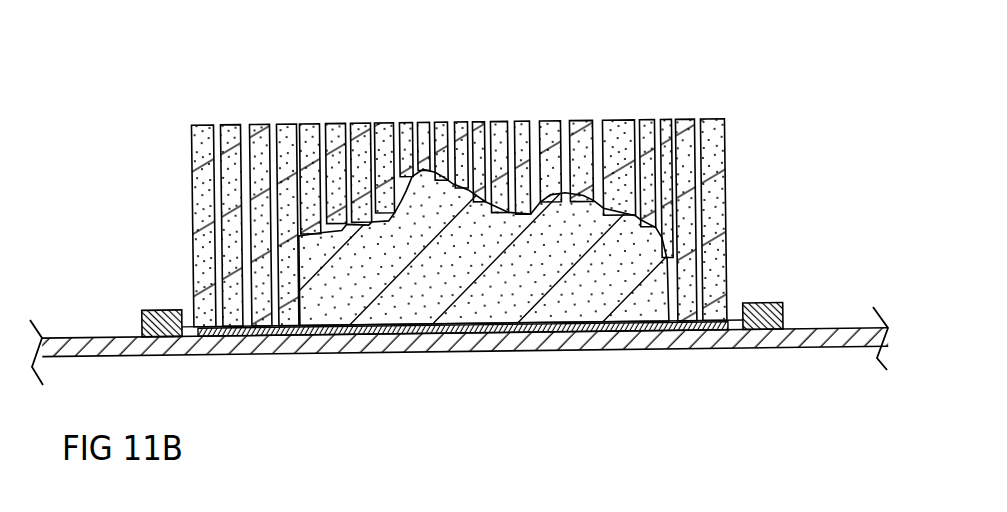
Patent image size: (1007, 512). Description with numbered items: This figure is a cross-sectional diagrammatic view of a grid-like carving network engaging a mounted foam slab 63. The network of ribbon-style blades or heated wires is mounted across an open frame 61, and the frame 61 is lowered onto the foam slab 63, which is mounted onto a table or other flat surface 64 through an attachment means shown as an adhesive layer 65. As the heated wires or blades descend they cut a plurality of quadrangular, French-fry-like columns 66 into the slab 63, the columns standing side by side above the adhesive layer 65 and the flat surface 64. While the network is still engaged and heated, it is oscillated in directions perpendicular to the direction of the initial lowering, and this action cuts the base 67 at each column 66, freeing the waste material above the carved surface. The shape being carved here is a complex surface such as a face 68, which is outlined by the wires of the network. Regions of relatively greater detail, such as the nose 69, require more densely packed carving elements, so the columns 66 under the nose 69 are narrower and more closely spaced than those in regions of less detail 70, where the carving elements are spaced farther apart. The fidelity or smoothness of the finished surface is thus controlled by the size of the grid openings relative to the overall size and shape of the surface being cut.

The open frame 61 is at (167, 312).
The foam slab 63 is at (606, 300).
The table or other flat surface 64 is at (792, 338).
The adhesive layer 65 is at (513, 329).
The quadrangular columns 66 is at (287, 133).
The base 67 is at (291, 233).
The face 68 is at (622, 202).
The nose 69 is at (455, 104).
The regions of less detail 70 is at (637, 103).